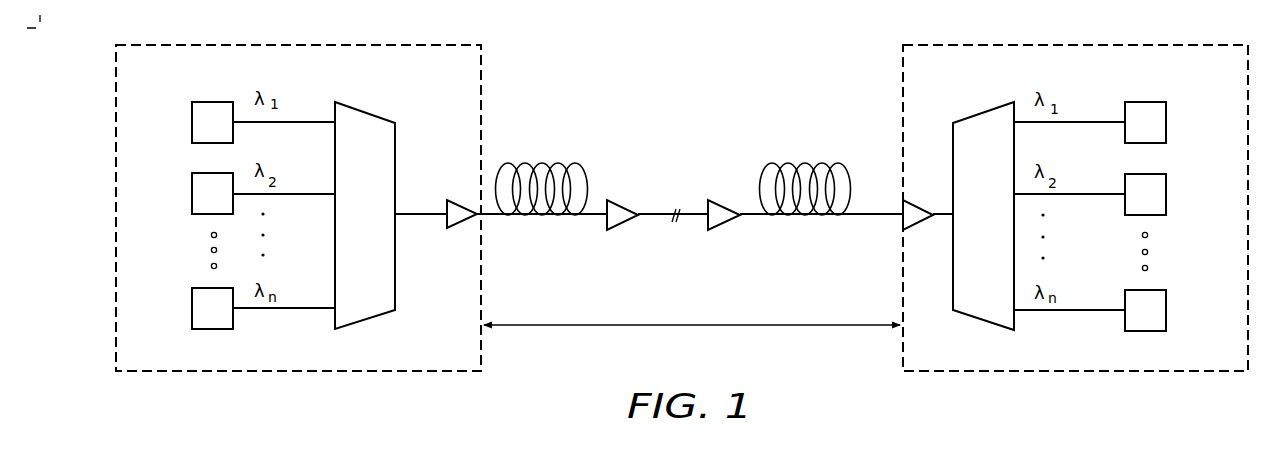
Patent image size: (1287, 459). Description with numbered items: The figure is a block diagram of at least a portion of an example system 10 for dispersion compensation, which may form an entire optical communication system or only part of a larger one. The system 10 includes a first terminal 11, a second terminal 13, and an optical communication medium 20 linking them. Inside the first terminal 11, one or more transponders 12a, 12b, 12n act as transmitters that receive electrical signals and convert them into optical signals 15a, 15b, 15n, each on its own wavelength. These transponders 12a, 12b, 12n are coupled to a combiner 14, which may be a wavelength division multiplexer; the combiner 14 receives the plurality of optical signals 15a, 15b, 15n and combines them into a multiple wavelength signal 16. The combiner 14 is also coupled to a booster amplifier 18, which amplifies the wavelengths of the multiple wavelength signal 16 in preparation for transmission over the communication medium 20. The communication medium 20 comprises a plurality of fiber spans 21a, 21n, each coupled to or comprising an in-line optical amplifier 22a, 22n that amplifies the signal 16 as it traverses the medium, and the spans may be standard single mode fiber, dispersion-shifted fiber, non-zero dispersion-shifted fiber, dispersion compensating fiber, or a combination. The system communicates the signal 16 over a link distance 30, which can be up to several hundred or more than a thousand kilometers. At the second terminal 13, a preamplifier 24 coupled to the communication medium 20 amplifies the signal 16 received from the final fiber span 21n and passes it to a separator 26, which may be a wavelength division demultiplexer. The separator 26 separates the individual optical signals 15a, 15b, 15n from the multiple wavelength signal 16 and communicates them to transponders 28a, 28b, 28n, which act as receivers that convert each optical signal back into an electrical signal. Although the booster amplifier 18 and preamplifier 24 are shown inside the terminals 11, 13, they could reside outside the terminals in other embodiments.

The system 10 is at (981, 408).
The first terminal 11 is at (462, 88).
The transponder 12a is at (192, 122).
The transponder 12b is at (192, 194).
The transponder 12n is at (192, 308).
The second terminal 13 is at (1230, 88).
The combiner 14 is at (366, 112).
The optical signal 15a is at (320, 122).
The optical signal 15b is at (320, 194).
The optical signal 15n is at (320, 308).
The multiple wavelength signal 16 is at (420, 212).
The booster amplifier 18 is at (462, 230).
The optical communication medium 20 is at (686, 172).
The fiber span 21a is at (542, 162).
The fiber span 21n is at (807, 162).
The in-line optical amplifier 22a is at (623, 230).
The in-line optical amplifier 22n is at (733, 230).
The preamplifier 24 is at (917, 232).
The separator 26 is at (985, 108).
The transponder 28a is at (1166, 122).
The transponder 28b is at (1166, 194).
The transponder 28n is at (1166, 311).
The link distance 30 is at (820, 323).